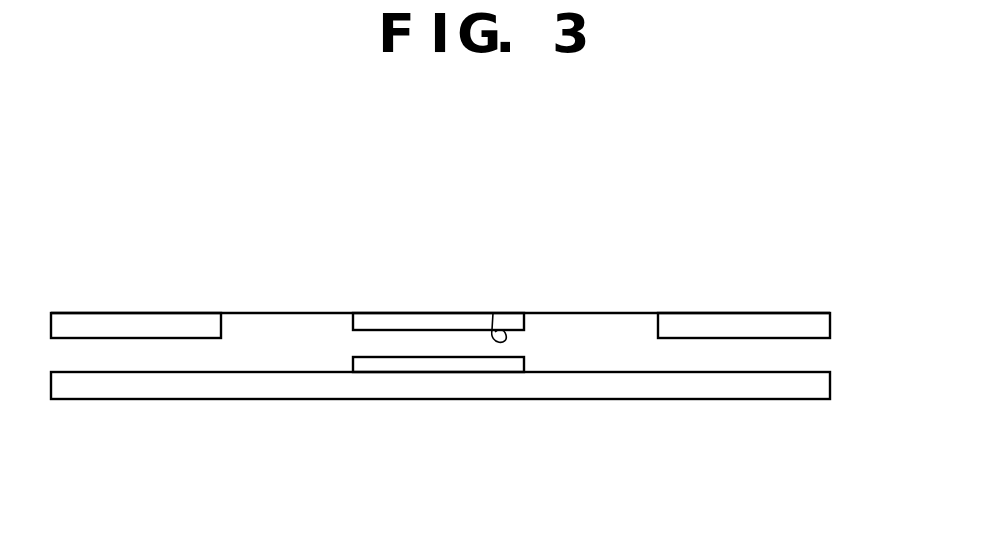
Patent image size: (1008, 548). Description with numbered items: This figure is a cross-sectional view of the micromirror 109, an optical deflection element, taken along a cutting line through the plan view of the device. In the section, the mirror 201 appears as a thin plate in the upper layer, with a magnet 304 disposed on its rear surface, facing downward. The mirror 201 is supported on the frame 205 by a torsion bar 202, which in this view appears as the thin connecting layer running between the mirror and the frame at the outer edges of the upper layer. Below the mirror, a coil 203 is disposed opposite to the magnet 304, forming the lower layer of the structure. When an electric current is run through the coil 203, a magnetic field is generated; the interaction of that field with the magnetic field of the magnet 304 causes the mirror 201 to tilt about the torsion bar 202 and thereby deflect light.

The micromirror 109 is at (767, 194).
The mirror 201 is at (403, 313).
The torsion bar 202 is at (592, 313).
The coil 203 is at (411, 372).
The frame 205 is at (744, 325).
The magnet 304 is at (493, 313).